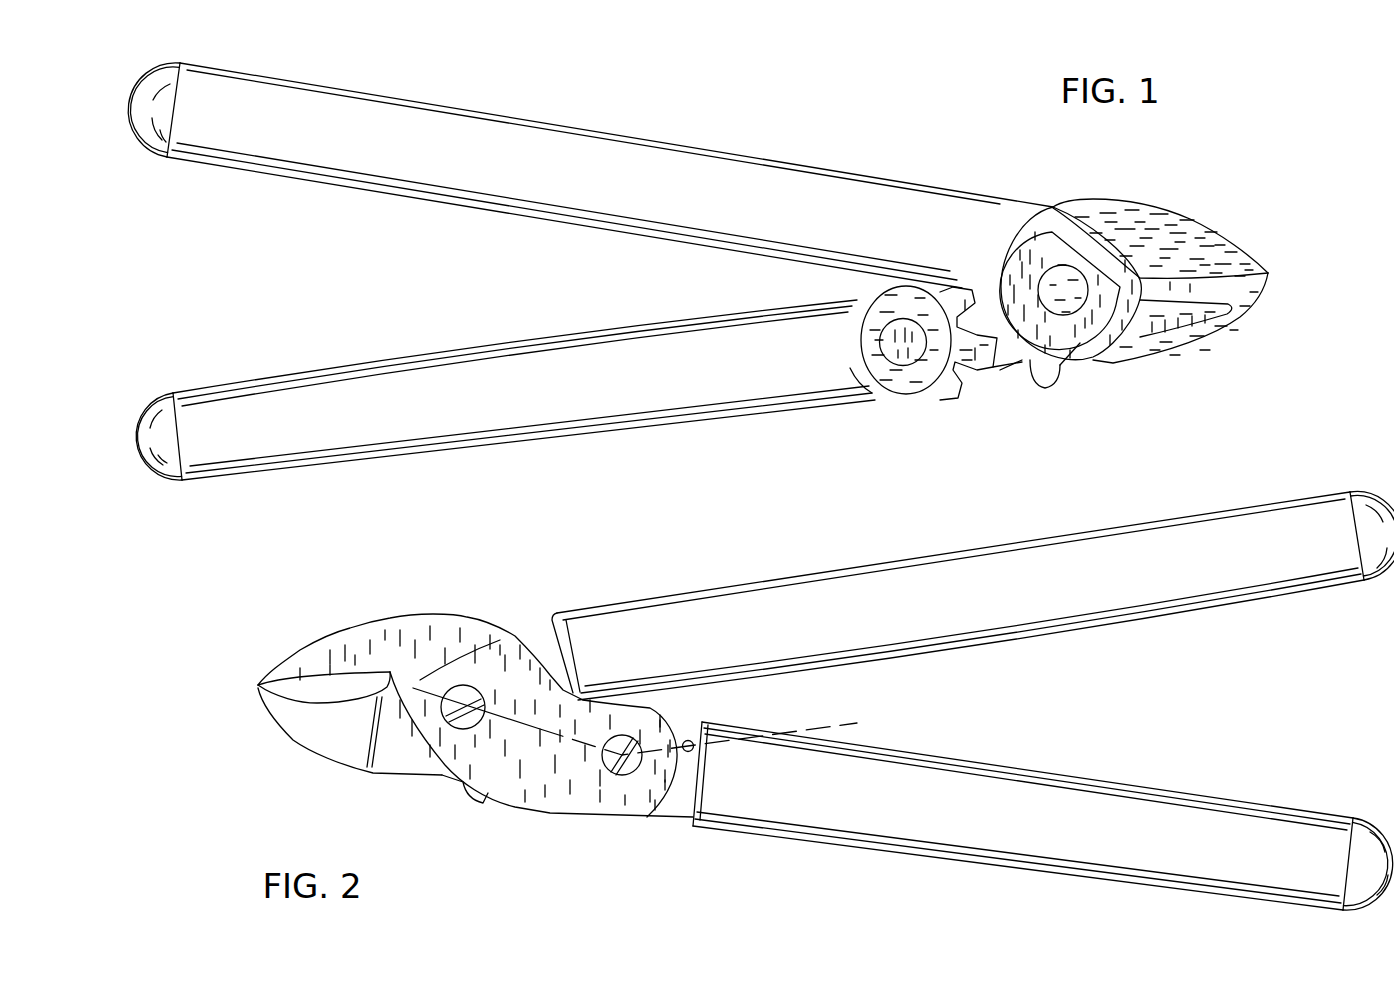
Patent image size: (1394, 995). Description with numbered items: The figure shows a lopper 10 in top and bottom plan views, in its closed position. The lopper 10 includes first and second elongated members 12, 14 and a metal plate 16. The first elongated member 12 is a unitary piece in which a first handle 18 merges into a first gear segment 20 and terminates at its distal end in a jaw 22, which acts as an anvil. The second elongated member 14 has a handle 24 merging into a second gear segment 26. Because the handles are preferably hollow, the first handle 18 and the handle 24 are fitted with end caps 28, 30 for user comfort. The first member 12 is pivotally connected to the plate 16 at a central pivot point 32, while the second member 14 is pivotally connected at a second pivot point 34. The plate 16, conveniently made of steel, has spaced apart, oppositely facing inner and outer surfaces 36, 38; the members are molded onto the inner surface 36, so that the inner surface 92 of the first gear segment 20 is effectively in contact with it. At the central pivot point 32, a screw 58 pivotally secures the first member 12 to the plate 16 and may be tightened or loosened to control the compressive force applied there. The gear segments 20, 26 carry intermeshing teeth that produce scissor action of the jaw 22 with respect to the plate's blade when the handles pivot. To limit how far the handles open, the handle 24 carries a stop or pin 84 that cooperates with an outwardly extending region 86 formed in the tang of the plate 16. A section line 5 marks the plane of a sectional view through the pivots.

In FIG. 1, the lopper 10 is at (917, 148).
In FIG. 1, the first elongated member 12 is at (590, 170).
In FIG. 2, the first elongated member 12 is at (973, 575).
In FIG. 1, the second elongated member 14 is at (505, 419).
In FIG. 2, the second elongated member 14 is at (1043, 824).
In FIG. 1, the metal plate 16 is at (1048, 306).
In FIG. 2, the metal plate 16 is at (304, 645).
In FIG. 1, the first handle 18 is at (503, 140).
In FIG. 2, the first handle 18 is at (1283, 517).
In FIG. 1, the first gear segment 20 is at (1088, 352).
In FIG. 1, the jaw 22 is at (1215, 330).
In FIG. 2, the jaw 22 is at (475, 744).
In FIG. 1, the handle 24 is at (430, 420).
In FIG. 2, the handle 24 is at (1237, 877).
In FIG. 1, the second gear segment 26 is at (940, 385).
In FIG. 1, the end cap 28 is at (145, 148).
In FIG. 2, the end cap 28 is at (1373, 578).
In FIG. 1, the end cap 30 is at (167, 472).
In FIG. 2, the end cap 30 is at (1362, 833).
In FIG. 1, the central pivot point 32 is at (1092, 322).
In FIG. 2, the central pivot point 32 is at (480, 664).
In FIG. 1, the second pivot point 34 is at (888, 373).
In FIG. 2, the second pivot point 34 is at (612, 786).
In FIG. 1, the inner surface 36 is at (1145, 235).
In FIG. 2, the outer surface 38 is at (545, 790).
In FIG. 2, the section line 5- 5 is at (438, 657).
In FIG. 2, the screw 58 is at (465, 728).
In FIG. 2, the stop or pin 84 is at (695, 742).
In FIG. 2, the outwardly extending region 86 is at (635, 803).
In FIG. 2, the inner surface 92 is at (440, 780).